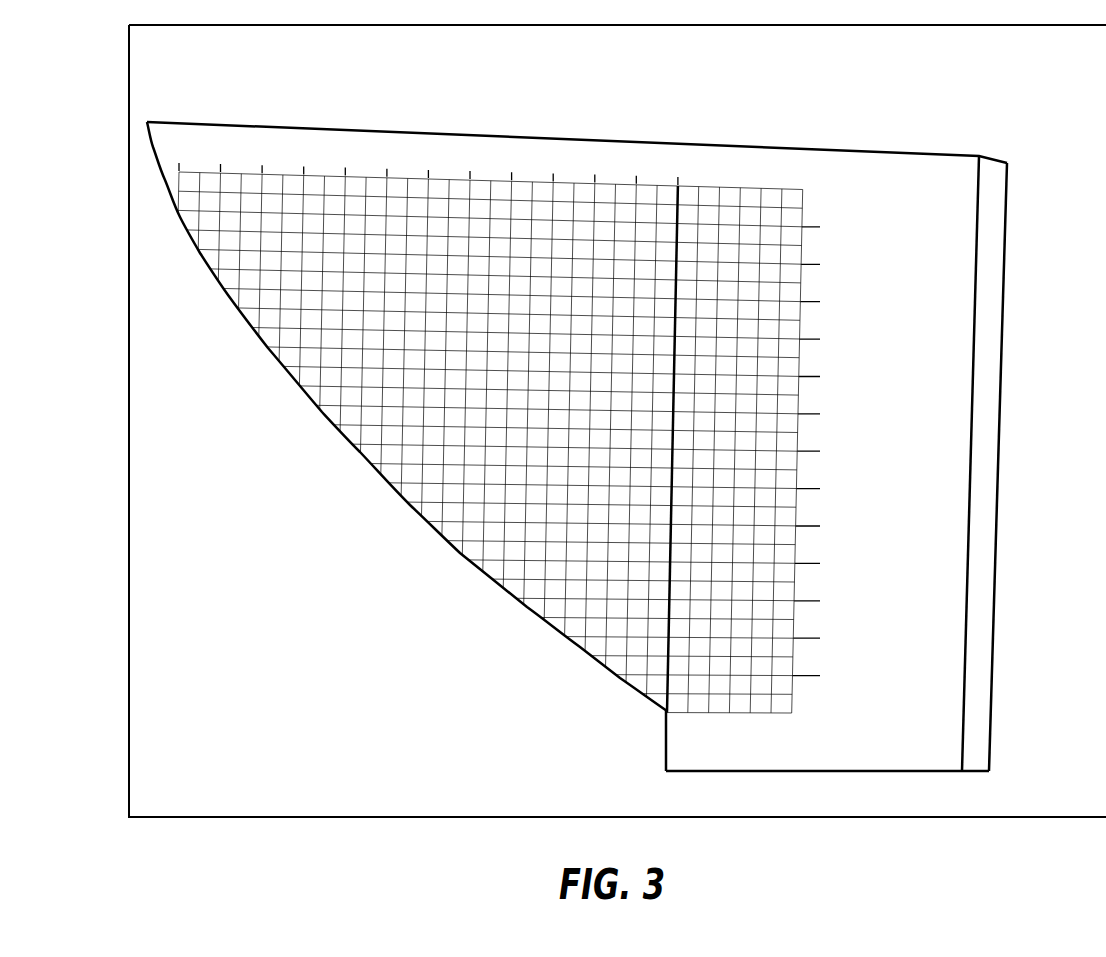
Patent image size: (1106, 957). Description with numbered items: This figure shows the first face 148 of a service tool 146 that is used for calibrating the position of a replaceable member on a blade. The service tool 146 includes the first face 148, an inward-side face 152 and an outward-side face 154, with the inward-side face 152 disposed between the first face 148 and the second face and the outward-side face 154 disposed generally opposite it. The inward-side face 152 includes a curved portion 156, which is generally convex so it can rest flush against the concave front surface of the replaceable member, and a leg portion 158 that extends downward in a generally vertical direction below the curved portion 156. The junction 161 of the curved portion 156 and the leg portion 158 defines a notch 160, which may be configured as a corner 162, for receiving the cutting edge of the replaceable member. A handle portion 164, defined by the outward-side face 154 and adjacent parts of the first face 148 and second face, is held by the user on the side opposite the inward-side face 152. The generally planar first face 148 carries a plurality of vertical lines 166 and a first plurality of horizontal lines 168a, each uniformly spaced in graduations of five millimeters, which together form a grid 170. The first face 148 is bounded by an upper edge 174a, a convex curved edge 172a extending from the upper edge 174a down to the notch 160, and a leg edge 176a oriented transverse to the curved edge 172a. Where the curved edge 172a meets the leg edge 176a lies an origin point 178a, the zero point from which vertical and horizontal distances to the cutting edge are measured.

The service tool 146 is at (611, 416).
The first face 148 is at (559, 408).
The inward-side face 152 is at (262, 351).
The outward-side face 154 is at (988, 292).
The curved portion 156 is at (402, 416).
The leg portion 158 is at (664, 756).
The notch 160 is at (593, 732).
The junction 161 is at (593, 732).
The corner 162 is at (666, 712).
The handle portion 164 is at (945, 430).
The vertical lines 166 is at (410, 138).
The first plurality of horizontal lines 168a is at (868, 216).
The grid 170 is at (302, 240).
The curved edge 172a is at (407, 416).
The upper edge 174a is at (148, 120).
The leg edge 176a is at (593, 732).
The origin point 178a is at (669, 715).